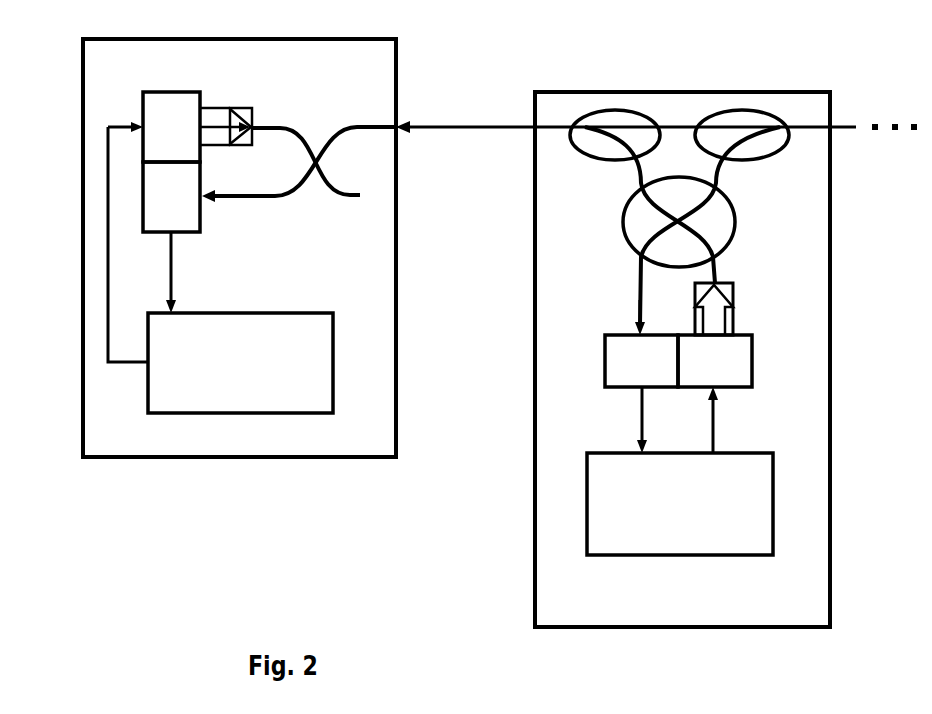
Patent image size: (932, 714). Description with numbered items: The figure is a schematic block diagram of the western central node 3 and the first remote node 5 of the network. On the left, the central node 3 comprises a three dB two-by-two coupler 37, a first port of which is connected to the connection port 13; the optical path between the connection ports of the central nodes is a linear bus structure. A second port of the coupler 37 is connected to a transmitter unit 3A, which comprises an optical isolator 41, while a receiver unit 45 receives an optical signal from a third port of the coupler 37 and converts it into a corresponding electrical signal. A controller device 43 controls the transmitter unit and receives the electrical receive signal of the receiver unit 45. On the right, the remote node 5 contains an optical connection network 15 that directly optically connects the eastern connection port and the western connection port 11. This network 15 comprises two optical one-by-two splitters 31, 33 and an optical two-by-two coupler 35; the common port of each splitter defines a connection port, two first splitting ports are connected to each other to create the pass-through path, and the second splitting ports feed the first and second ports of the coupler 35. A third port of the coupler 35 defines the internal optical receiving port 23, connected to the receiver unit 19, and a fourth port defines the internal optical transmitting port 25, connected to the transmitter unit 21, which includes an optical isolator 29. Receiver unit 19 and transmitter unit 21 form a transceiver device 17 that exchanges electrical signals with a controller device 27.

The central node 3 is at (260, 444).
The OLT transmitter 3A is at (146, 110).
The optical isolator 41 is at (253, 111).
The 3 dB 2×2 coupler 37 is at (315, 195).
The receiver unit 45 is at (183, 220).
The controller device 43 is at (313, 375).
The connection port 13 is at (402, 118).
The western connection port 11 is at (532, 130).
The remote node 5 is at (808, 388).
The optical 1×2 splitter 31 is at (623, 120).
The optical 1×2 splitter 33 is at (737, 120).
The optical 2×2 coupler 35 is at (630, 228).
The optical connection network 15 is at (750, 197).
The internal optical receiving port 23 is at (632, 328).
The internal optical transmitting port 25 is at (716, 285).
The optical isolator 29 is at (728, 311).
The receiver unit 19 is at (612, 366).
The transmitter unit 21 is at (738, 378).
The transceiver device 17 is at (670, 400).
The controller device 27 is at (600, 542).